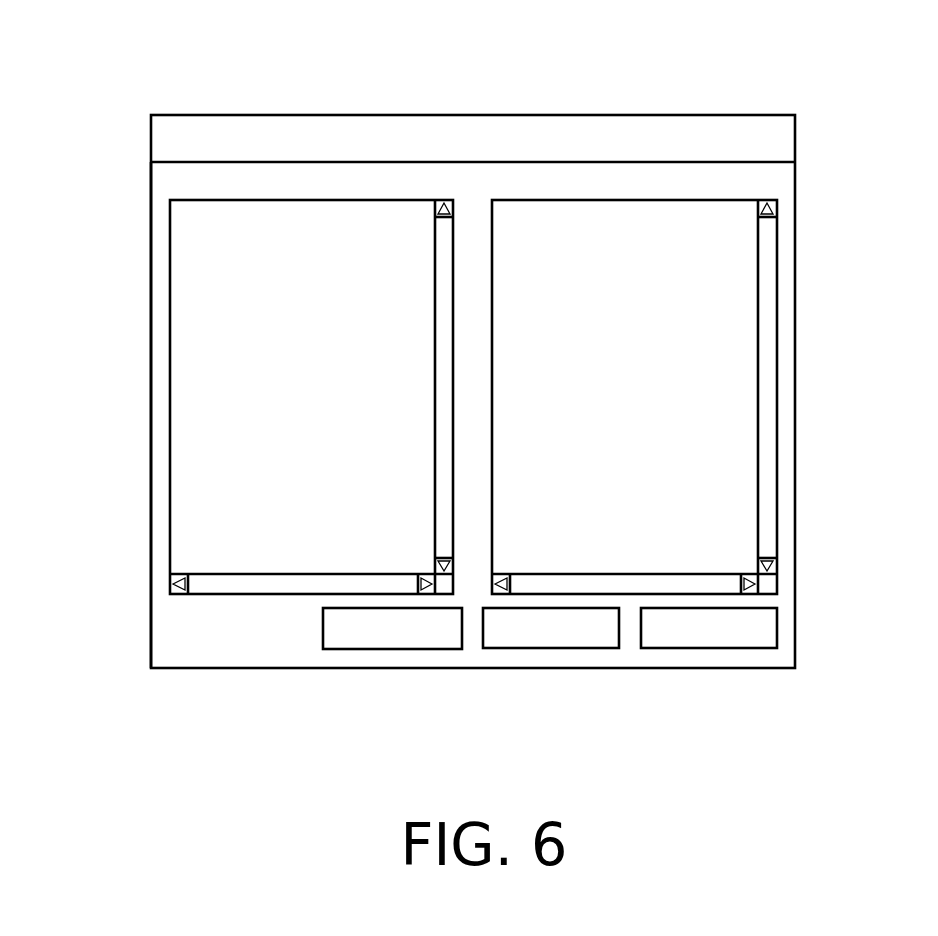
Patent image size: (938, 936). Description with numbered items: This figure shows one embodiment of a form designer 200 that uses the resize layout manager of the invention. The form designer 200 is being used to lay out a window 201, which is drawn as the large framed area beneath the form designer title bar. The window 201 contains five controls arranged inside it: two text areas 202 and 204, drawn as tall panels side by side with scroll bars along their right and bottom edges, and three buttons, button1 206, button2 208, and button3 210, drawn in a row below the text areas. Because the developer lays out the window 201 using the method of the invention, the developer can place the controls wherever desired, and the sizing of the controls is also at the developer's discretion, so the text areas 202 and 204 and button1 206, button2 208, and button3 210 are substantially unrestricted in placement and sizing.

The form designer 200 is at (497, 33).
The window 201 is at (151, 233).
The text area 202 is at (170, 378).
The text area 204 is at (777, 253).
The button1 206 is at (392, 649).
The button2 208 is at (550, 648).
The button3 210 is at (708, 648).